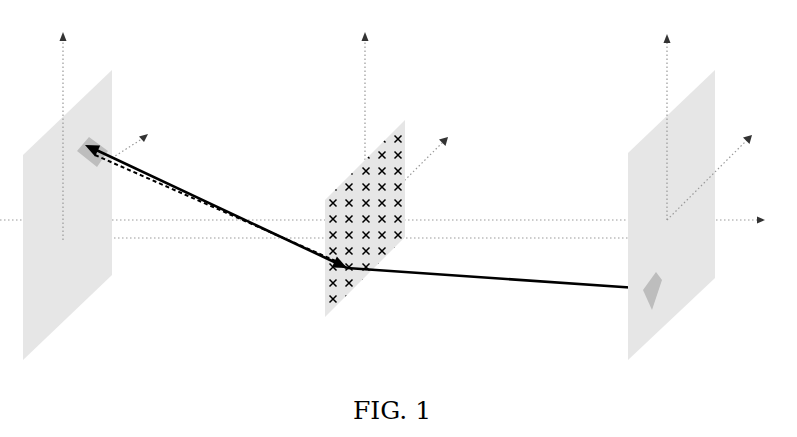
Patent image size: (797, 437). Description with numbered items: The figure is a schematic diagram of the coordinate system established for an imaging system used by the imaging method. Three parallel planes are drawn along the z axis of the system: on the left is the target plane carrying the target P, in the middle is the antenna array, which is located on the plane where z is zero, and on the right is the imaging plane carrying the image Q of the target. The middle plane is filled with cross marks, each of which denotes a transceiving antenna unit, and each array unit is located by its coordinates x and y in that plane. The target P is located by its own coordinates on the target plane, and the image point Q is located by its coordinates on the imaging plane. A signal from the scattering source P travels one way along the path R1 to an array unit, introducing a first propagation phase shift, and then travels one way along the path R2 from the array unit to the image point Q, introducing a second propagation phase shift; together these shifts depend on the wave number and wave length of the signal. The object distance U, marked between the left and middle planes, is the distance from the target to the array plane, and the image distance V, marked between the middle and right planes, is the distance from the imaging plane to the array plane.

The target P is at (92, 131).
The image of the target Q is at (648, 306).
The one-way propagation path R1 is at (216, 206).
The one-way propagation path R2 is at (496, 297).
The object distance U is at (120, 215).
The image distance V is at (612, 215).
The x coordinate of the array unit x is at (418, 171).
The y coordinate of the array unit y is at (376, 120).
The z axis z is at (386, 235).